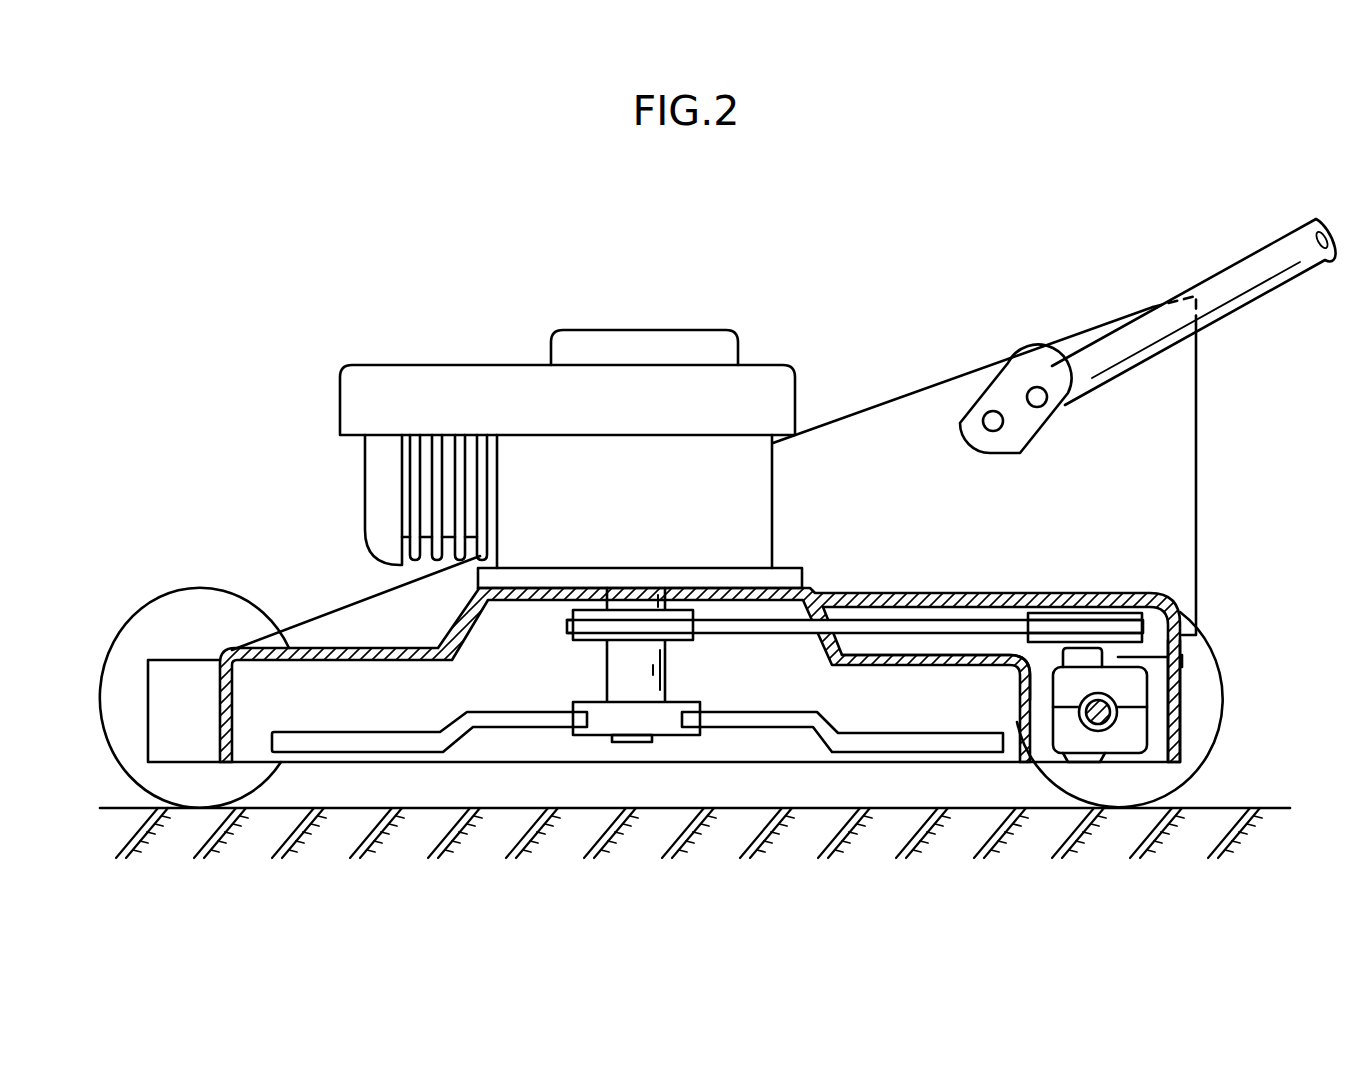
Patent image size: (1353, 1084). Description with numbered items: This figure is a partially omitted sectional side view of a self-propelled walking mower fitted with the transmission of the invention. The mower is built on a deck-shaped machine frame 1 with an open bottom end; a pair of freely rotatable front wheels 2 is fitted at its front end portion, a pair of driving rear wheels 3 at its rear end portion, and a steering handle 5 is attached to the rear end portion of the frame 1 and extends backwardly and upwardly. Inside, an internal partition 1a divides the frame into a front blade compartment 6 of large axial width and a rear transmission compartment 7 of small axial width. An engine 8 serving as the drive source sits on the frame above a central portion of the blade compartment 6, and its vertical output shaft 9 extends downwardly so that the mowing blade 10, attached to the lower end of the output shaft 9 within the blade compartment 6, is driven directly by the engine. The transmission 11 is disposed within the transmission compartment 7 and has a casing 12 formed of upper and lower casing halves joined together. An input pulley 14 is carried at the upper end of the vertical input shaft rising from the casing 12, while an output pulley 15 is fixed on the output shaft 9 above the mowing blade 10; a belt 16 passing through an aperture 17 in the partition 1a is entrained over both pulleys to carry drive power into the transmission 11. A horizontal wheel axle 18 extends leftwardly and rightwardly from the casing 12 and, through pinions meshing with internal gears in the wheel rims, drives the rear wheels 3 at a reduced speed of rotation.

The machine frame 1 is at (847, 600).
The internal partition 1a is at (1018, 684).
The front wheels 2 is at (217, 587).
The rear wheels 3 is at (1205, 758).
The steering handle 5 is at (1243, 270).
The blade compartment 6 is at (503, 677).
The transmission compartment 7 is at (1158, 733).
The engine 8 is at (555, 455).
The output shaft 9 is at (640, 603).
The mowing blade 10 is at (856, 735).
The transmission 11 is at (1153, 685).
The casing 12 is at (1063, 728).
The input pulley 14 is at (1045, 613).
The output pulley 15 is at (587, 603).
The belt 16 is at (887, 628).
The aperture 17 is at (812, 627).
The wheel axle 18 is at (1097, 731).